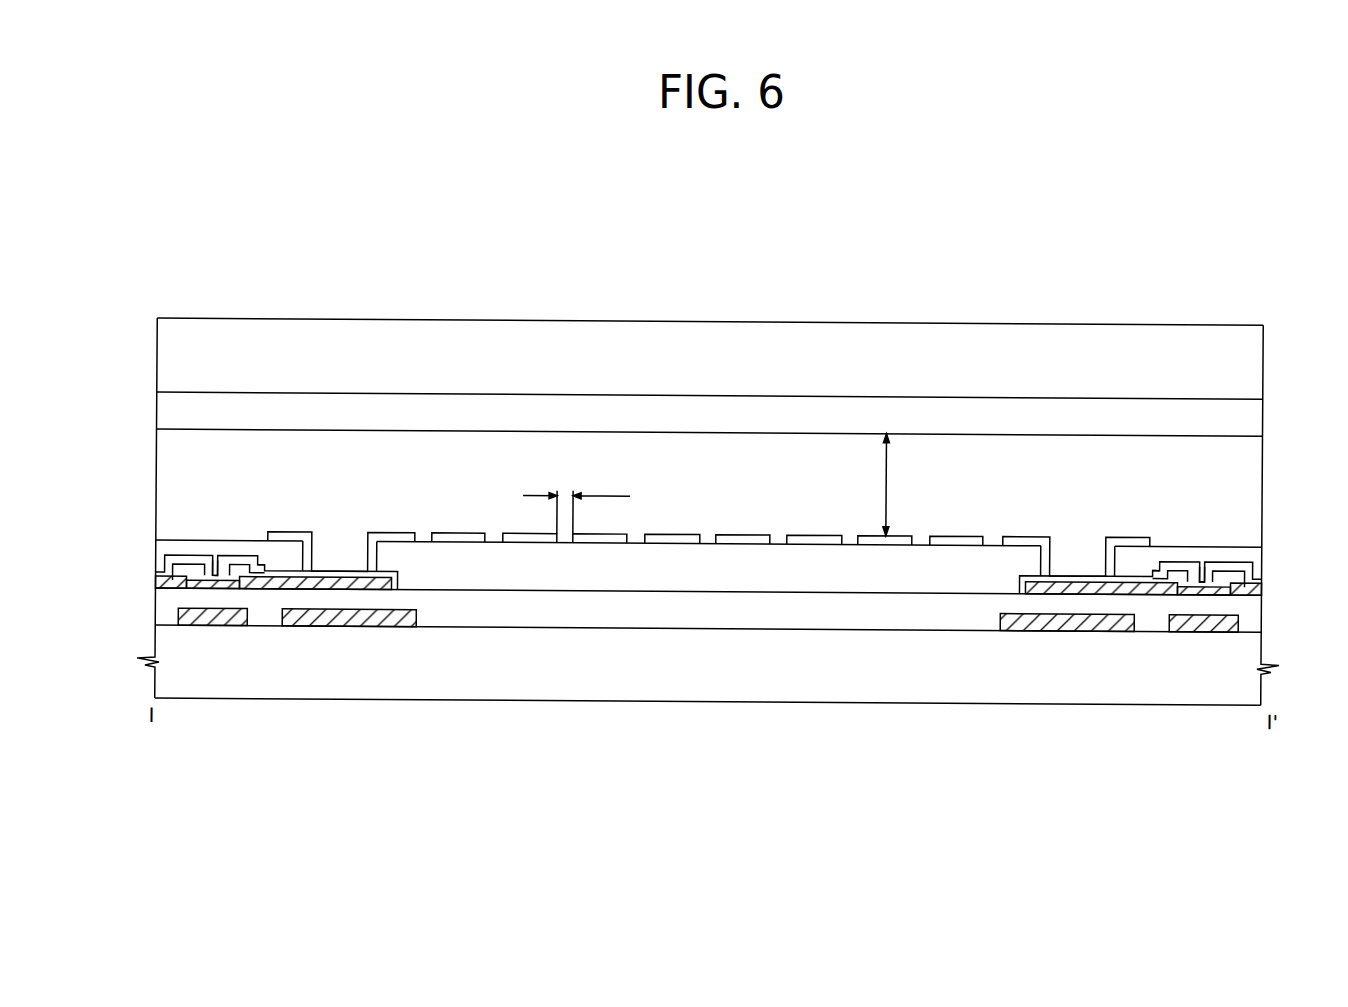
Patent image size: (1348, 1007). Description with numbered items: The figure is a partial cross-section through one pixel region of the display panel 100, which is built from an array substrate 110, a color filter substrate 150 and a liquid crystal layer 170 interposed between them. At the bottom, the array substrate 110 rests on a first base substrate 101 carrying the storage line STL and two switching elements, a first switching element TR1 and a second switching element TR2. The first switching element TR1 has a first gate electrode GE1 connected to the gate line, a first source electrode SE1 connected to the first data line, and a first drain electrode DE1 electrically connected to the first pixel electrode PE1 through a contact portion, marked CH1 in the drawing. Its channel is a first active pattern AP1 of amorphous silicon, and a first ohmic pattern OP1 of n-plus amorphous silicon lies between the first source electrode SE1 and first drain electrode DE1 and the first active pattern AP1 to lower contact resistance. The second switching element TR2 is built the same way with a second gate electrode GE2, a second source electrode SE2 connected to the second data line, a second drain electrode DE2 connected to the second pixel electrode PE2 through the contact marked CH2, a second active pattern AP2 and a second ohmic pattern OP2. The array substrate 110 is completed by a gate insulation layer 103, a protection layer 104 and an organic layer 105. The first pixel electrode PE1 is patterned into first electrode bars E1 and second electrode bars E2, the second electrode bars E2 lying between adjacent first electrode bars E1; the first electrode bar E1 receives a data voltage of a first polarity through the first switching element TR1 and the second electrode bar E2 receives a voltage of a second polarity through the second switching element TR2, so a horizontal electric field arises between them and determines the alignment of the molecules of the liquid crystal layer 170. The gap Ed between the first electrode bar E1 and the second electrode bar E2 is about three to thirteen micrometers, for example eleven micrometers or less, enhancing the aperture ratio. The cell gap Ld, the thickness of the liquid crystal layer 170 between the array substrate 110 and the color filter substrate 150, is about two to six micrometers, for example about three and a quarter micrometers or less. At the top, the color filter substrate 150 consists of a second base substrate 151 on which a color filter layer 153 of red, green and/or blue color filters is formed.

The display panel 100 is at (712, 242).
The color filter substrate 150 is at (143, 320).
The second base substrate 151 is at (1253, 356).
The color filter layer 153 is at (1253, 414).
The liquid crystal layer 170 is at (143, 432).
The array substrate 110 is at (143, 555).
The organic layer 105 is at (1253, 546).
The protection layer 104 is at (1253, 576).
The gate insulation layer 103 is at (1253, 605).
The first base substrate 101 is at (1253, 640).
The first pixel electrode PE1 is at (390, 531).
The second pixel electrode PE2 is at (1029, 531).
The first electrode bar E1 is at (676, 531).
The second electrode bar E2 is at (744, 531).
The gap Ed is at (576, 501).
The cell gap Ld is at (900, 485).
The first source electrode SE1 is at (172, 583).
The first gate electrode GE1 is at (220, 617).
The first drain electrode DE1 is at (270, 586).
The first active pattern AP1 is at (190, 576).
The first contact hole CH1 is at (214, 572).
The first ohmic pattern OP1 is at (250, 584).
The first switching element TR1 is at (287, 768).
The second source electrode SE2 is at (1246, 583).
The second gate electrode GE2 is at (1198, 617).
The second drain electrode DE2 is at (1148, 586).
The second active pattern AP2 is at (1228, 576).
The second contact hole CH2 is at (1204, 572).
The second ohmic pattern OP2 is at (1168, 584).
The second switching element TR2 is at (1262, 768).
The storage line STL is at (1073, 617).